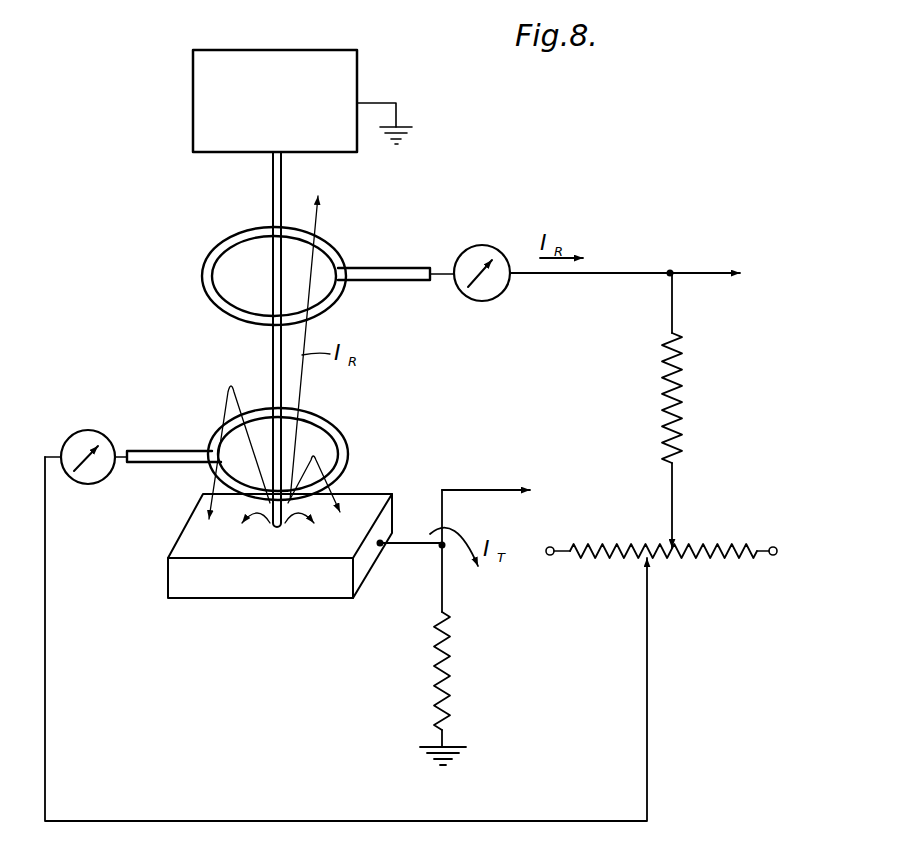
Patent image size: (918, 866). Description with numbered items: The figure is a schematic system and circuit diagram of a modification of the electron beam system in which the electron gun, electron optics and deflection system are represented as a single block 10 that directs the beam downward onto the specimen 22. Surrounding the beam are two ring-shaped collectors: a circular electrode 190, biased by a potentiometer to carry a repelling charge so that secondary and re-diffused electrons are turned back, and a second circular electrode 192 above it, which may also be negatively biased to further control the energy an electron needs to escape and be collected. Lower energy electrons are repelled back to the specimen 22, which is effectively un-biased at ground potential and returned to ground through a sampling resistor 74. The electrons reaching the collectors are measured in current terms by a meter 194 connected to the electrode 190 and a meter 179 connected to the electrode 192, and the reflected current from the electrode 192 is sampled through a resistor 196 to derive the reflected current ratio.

The electron optics and deflection unit 10 is at (358, 72).
The second circular electrode 192 is at (343, 250).
The meter 179 is at (487, 246).
The resistor 196 is at (680, 408).
The meter 194 is at (113, 441).
The circular electrode 190 is at (349, 450).
The specimen 22 is at (327, 587).
The sampling resistor 74 is at (446, 683).